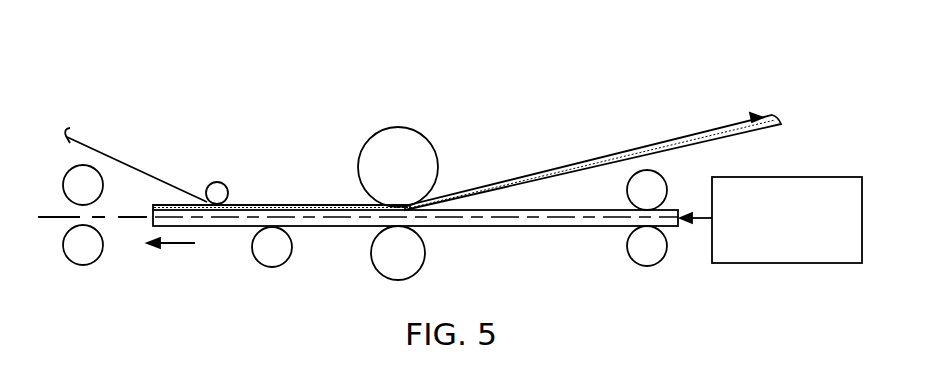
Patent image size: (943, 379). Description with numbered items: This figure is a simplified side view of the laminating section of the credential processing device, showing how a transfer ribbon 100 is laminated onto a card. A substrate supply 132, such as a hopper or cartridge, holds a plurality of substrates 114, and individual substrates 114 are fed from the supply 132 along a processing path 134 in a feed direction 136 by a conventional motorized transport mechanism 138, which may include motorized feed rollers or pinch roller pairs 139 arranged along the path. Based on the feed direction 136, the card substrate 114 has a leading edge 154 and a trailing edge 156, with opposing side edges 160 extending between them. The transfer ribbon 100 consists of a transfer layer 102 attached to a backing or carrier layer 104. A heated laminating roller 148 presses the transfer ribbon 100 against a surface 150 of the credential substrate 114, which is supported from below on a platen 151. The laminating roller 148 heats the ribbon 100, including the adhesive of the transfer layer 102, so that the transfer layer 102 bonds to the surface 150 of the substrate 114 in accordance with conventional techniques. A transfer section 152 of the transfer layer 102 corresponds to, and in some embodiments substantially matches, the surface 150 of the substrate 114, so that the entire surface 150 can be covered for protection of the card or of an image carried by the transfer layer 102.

The transfer ribbon 100 is at (707, 128).
The transfer layer 102 is at (552, 177).
The carrier layer 104 is at (82, 143).
The substrate 114 is at (330, 228).
The substrate supply 132 is at (790, 178).
The processing path 134 is at (58, 217).
The feed direction 136 is at (178, 243).
The transport mechanism 138 is at (714, 319).
The pinch roller pairs 139 is at (85, 262).
The heated laminating roller 148 is at (397, 132).
The surface 150 is at (512, 197).
The platen 151 is at (408, 263).
The transfer section 152 is at (305, 206).
The leading edge 154 is at (152, 215).
The trailing edge 156 is at (681, 210).
The side edges 160 is at (514, 224).